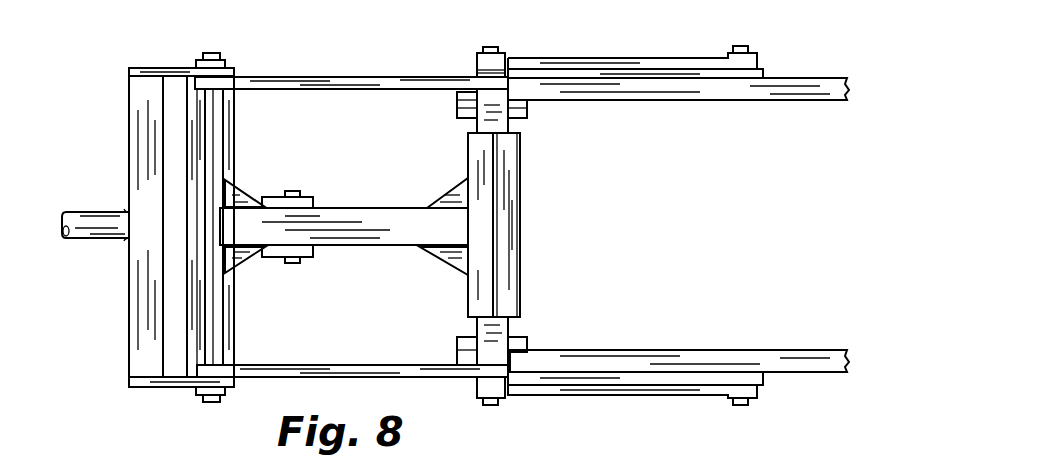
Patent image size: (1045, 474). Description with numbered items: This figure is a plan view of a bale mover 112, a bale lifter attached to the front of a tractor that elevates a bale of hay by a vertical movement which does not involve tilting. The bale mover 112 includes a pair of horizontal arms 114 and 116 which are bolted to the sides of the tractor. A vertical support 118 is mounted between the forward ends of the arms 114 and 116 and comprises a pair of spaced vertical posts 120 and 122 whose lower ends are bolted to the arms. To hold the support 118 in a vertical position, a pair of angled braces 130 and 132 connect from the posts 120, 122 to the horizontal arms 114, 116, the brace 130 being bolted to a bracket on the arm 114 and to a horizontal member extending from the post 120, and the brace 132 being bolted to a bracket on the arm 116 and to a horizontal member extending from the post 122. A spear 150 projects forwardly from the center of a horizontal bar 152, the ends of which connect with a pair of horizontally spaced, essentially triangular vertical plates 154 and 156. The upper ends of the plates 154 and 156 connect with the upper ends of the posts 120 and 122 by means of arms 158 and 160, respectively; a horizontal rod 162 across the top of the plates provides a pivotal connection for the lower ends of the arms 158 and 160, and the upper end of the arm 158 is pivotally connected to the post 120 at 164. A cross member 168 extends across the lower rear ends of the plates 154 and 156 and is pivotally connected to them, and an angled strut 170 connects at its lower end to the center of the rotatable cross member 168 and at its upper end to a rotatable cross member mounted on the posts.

The bale mover 112 is at (698, 38).
The horizontal arm 114 is at (652, 100).
The horizontal arm 116 is at (713, 350).
The vertical support 118 is at (520, 328).
The vertical post 120 is at (477, 110).
The vertical post 122 is at (477, 330).
The angled brace 130 is at (632, 58).
The angled brace 132 is at (637, 395).
The spear 150 is at (93, 238).
The horizontal bar 152 is at (128, 157).
The vertical plate 154 is at (167, 72).
The vertical plate 156 is at (177, 388).
The arm 158 is at (295, 77).
The arm 160 is at (336, 365).
The horizontal rod 162 is at (215, 124).
The pivotal connection 164 is at (457, 72).
The cross member 168 is at (233, 306).
The angled strut 170 is at (353, 210).